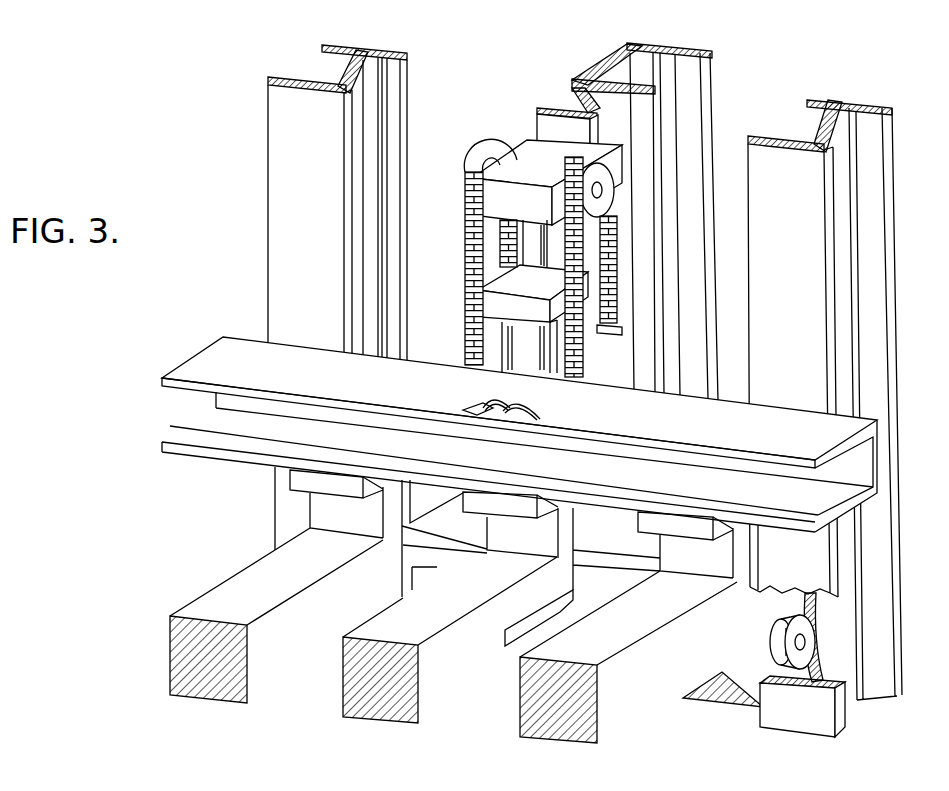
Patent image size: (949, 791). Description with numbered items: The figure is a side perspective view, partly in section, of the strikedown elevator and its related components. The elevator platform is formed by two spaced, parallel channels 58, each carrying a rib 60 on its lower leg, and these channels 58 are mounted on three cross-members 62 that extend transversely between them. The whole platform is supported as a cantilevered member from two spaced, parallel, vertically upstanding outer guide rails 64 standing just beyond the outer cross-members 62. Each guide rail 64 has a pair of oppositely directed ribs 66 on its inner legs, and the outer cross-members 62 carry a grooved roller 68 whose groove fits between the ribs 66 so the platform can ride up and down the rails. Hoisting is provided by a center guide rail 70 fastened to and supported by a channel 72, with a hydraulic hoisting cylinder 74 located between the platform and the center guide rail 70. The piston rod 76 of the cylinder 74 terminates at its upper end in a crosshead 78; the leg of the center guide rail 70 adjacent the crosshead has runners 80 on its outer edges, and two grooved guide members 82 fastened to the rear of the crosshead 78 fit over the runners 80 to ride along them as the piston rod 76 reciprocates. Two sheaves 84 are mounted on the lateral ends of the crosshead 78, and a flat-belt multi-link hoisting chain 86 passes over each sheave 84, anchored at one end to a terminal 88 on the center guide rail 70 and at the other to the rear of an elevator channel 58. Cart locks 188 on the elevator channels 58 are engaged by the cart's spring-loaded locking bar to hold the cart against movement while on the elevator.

The channel 58 is at (200, 358).
The rib 60 is at (185, 427).
The cross-member 62 is at (230, 588).
The outer guide rail 64 is at (272, 128).
The rib 66 is at (345, 79).
The grooved roller 68 is at (768, 637).
The center guide rail 70 is at (556, 108).
The channel 72 is at (603, 77).
The hydraulic hoisting cylinder 74 is at (530, 357).
The piston rod 76 is at (530, 232).
The crosshead 78 is at (477, 196).
The runner 80 is at (537, 110).
The grooved guide member 82 is at (528, 140).
The sheave 84 is at (592, 173).
The hoisting chain 86 is at (466, 254).
The terminal 88 is at (604, 334).
The cart lock 188 is at (486, 400).